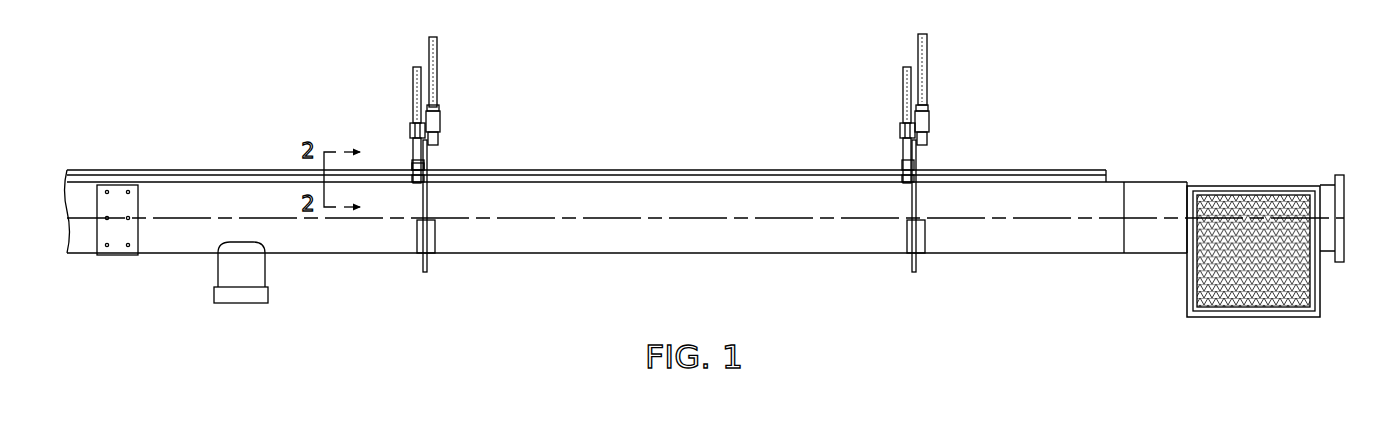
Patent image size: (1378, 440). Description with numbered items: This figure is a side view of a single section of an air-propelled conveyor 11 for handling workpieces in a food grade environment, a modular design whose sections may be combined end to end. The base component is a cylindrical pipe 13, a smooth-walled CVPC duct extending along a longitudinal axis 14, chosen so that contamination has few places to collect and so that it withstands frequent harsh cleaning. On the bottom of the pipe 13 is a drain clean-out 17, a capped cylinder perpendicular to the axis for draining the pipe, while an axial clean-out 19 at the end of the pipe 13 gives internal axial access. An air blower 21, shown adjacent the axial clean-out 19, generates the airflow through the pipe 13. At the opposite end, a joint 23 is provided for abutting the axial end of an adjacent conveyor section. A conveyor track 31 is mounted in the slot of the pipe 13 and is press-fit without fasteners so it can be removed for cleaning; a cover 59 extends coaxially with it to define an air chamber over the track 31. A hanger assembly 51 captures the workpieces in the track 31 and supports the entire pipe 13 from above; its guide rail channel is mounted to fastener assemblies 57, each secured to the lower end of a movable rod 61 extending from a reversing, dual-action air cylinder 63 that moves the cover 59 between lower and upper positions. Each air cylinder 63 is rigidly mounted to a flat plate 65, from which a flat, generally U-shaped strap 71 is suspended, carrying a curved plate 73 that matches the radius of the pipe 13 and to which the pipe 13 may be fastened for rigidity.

The air-propelled conveyor 11 is at (1085, 131).
The pipe 13 is at (1019, 237).
The longitudinal axis 14 is at (729, 218).
The drain clean-out 17 is at (252, 270).
The axial clean-out 19 is at (1338, 175).
The air blower 21 is at (1220, 300).
The joint 23 is at (117, 242).
The conveyor track 31 is at (588, 173).
The hanger assembly 51 is at (449, 116).
The fastener assembly 57 is at (415, 164).
The cover 59 is at (647, 170).
The movable rod 61 is at (908, 148).
The air cylinder 63 is at (905, 82).
The flat plate 65 is at (927, 53).
The strap 71 is at (427, 199).
The curved plate 73 is at (420, 237).